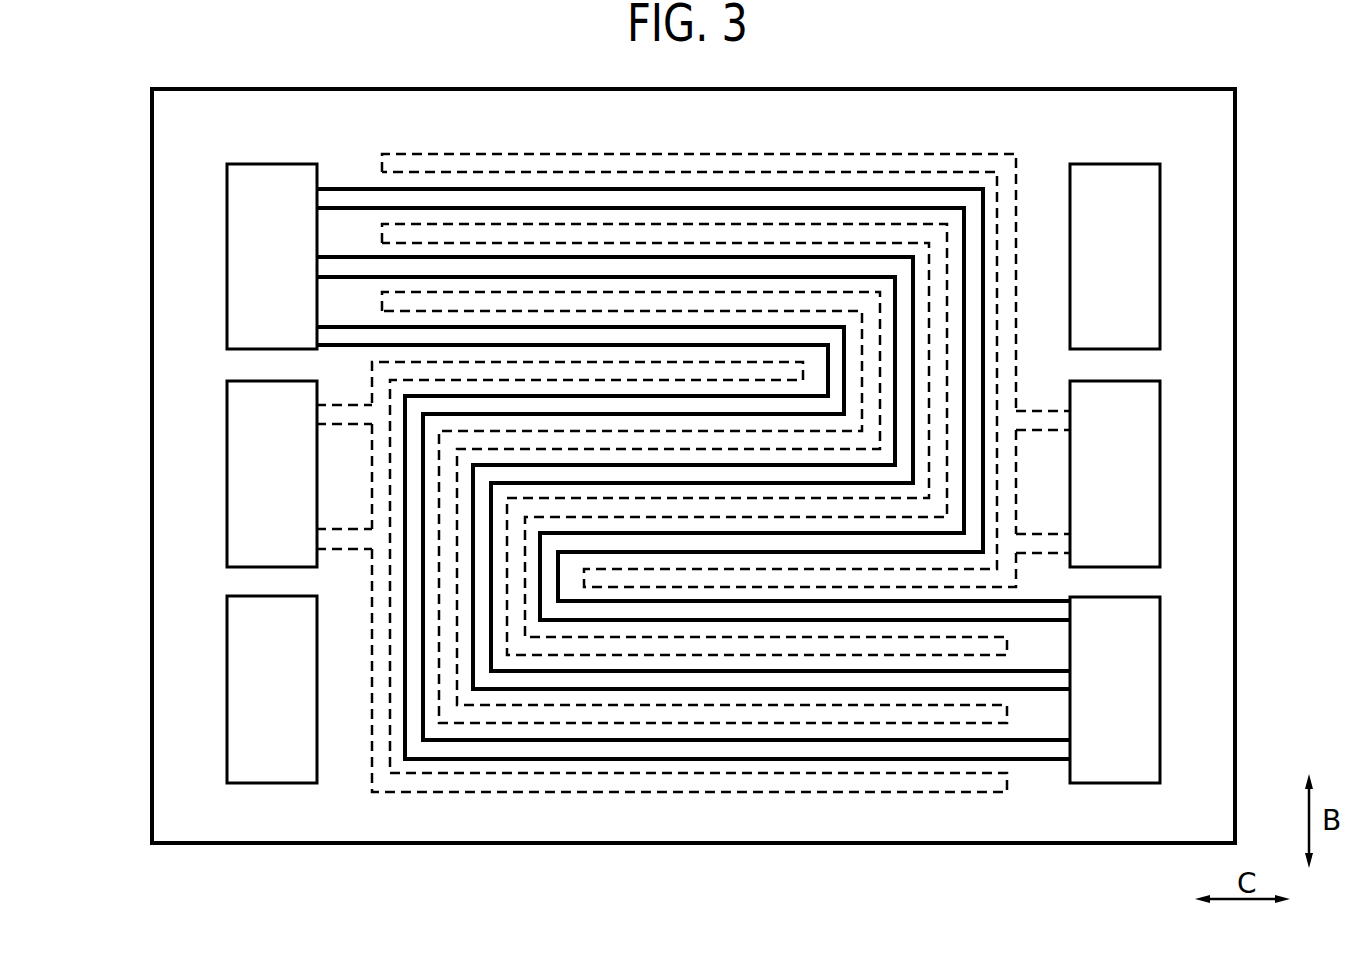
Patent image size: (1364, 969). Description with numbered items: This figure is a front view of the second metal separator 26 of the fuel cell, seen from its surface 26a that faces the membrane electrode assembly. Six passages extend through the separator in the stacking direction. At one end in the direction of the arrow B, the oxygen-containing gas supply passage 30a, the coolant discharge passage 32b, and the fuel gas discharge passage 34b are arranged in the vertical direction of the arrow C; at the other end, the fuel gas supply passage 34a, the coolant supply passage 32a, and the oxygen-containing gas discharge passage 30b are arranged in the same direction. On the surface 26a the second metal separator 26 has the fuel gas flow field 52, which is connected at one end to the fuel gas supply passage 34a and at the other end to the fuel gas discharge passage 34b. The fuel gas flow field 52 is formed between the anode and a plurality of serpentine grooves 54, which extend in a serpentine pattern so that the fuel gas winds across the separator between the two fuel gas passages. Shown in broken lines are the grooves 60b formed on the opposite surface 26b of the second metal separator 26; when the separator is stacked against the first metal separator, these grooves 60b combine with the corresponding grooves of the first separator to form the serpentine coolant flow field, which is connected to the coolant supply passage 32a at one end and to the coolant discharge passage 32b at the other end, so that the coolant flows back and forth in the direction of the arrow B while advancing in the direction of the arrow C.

The second metal separator 26 is at (384, 30).
The surface of the second metal separator 26a is at (953, 115).
The surface of the second metal separator 26b is at (836, 115).
The oxygen-containing gas supply passage 30a is at (1115, 256).
The oxygen-containing gas discharge passage 30b is at (272, 689).
The coolant supply passage 32a is at (272, 474).
The coolant discharge passage 32b is at (1115, 474).
The fuel gas supply passage 34a is at (272, 256).
The fuel gas discharge passage 34b is at (1115, 690).
The fuel gas flow field 52 is at (693, 468).
The serpentine grooves 54 is at (437, 200).
The grooves of the second metal separator 60b is at (843, 712).